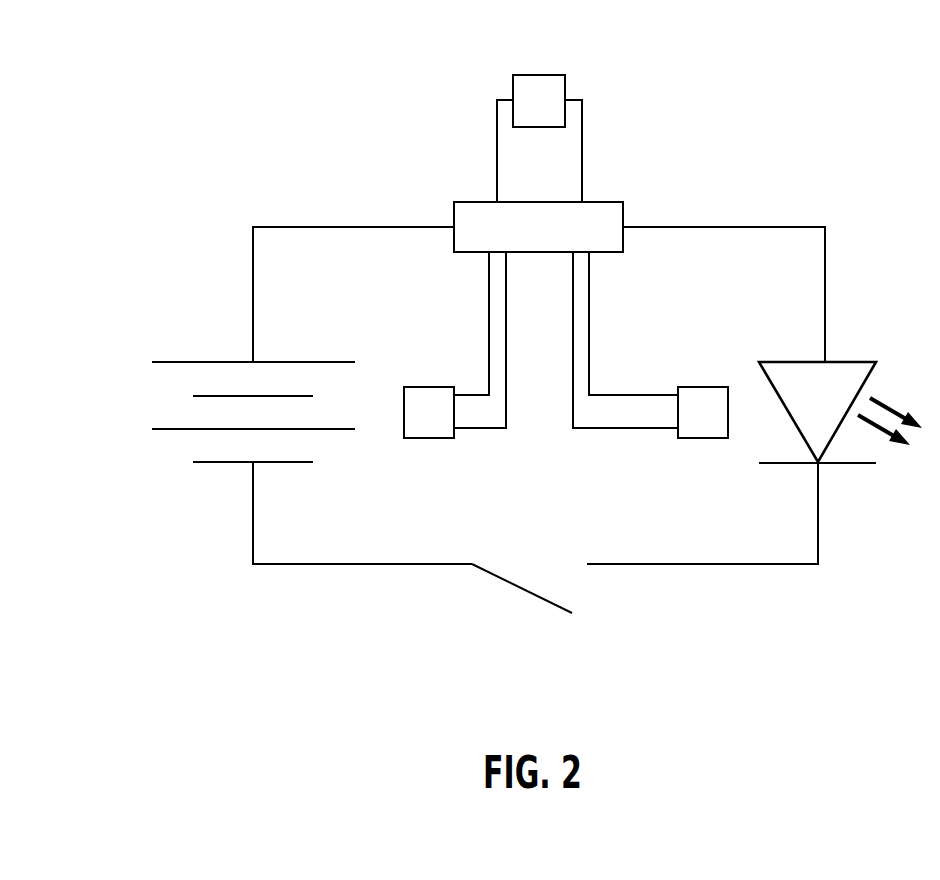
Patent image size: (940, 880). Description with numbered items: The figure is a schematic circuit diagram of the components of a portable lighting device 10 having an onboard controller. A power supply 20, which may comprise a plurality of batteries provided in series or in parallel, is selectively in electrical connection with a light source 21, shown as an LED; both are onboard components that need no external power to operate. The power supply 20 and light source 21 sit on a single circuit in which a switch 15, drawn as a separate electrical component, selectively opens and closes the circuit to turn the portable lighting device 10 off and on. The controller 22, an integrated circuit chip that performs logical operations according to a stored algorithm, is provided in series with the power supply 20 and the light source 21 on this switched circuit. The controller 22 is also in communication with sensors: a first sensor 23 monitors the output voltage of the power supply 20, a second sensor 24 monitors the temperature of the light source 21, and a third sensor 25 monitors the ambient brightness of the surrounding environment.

The portable lighting device 10 is at (206, 652).
The switch 15 is at (525, 592).
The power supply 20 is at (135, 345).
The light source 21 is at (847, 377).
The controller 22 is at (603, 210).
The first sensor 23 is at (438, 432).
The second sensor 24 is at (692, 433).
The third sensor 25 is at (523, 88).